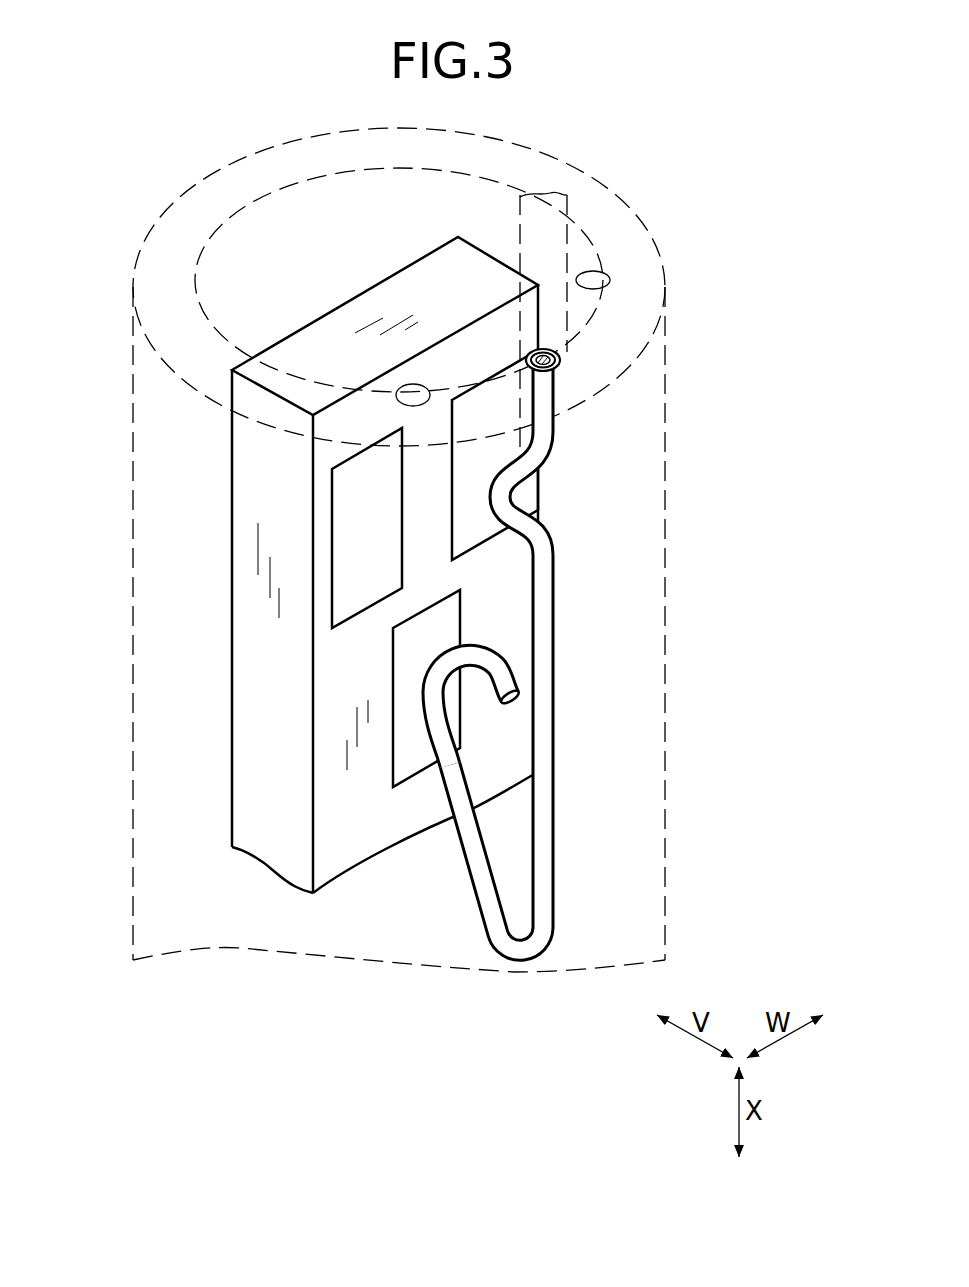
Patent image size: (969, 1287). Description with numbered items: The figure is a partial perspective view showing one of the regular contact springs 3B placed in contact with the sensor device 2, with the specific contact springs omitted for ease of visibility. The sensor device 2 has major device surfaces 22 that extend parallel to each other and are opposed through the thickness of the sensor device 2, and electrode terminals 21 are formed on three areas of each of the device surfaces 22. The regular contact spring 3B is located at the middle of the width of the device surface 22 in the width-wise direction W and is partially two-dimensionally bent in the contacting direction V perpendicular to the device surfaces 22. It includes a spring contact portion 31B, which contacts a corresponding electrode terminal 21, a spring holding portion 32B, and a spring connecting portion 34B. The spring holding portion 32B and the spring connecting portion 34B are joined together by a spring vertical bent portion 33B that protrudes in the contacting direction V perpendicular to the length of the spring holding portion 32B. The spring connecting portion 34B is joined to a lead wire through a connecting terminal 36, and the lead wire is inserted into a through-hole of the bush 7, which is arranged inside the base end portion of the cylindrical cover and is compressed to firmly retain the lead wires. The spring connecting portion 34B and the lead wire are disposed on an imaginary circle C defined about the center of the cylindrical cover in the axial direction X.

The sensor device 2 is at (300, 639).
The electrode terminals 21 is at (412, 733).
The device surfaces 22 is at (335, 838).
The regular contact spring 3B is at (645, 649).
The spring contact portion 31B is at (433, 695).
The spring holding portion 32B is at (540, 738).
The spring vertical bent portion 33B is at (497, 506).
The spring connecting portion 34B is at (653, 394).
The connecting terminal 36 is at (583, 236).
The bush 7 is at (597, 180).
The imaginary circle C is at (240, 210).